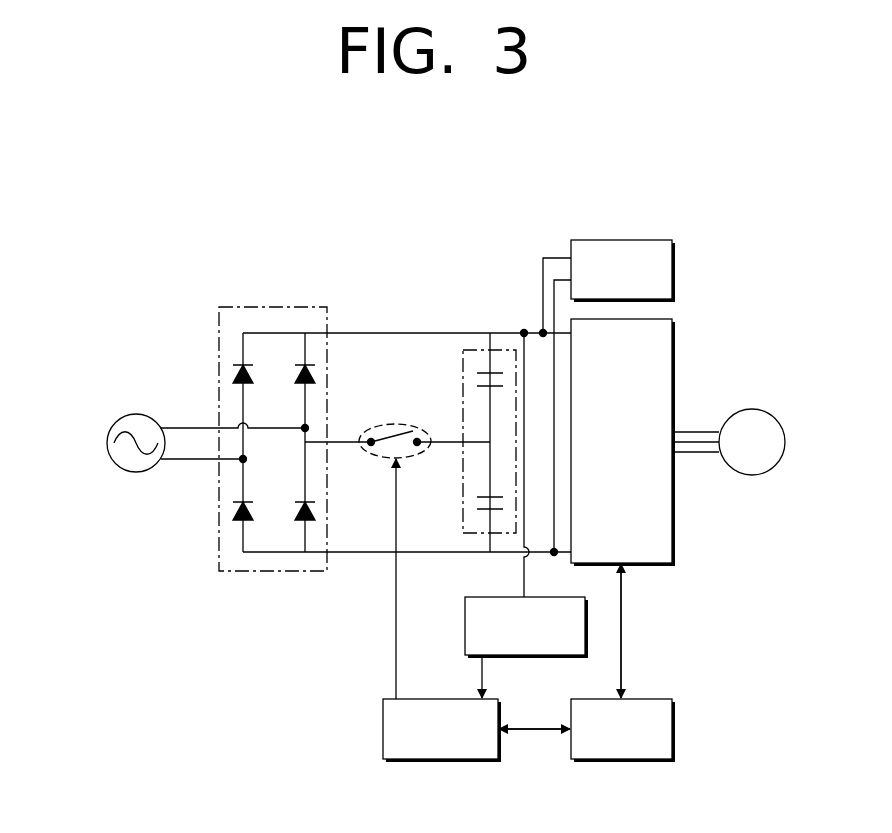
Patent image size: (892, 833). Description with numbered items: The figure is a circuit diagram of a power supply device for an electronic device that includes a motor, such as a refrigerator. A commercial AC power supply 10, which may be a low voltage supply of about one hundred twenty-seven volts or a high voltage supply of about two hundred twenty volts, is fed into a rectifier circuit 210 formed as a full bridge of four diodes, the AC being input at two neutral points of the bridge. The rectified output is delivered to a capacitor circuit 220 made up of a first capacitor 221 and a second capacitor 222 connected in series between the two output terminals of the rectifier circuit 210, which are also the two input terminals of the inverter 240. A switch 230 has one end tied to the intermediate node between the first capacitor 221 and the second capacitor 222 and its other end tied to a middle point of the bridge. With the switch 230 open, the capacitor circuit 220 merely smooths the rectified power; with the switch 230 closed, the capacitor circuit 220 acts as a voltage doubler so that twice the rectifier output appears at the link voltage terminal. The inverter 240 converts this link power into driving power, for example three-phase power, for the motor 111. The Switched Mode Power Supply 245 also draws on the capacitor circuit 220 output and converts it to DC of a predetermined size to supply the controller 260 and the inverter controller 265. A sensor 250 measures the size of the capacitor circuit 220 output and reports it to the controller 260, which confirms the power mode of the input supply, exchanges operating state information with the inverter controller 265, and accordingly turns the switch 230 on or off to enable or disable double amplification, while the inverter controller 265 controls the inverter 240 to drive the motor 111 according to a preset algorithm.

The AC power supply 10 is at (135, 472).
The rectifier circuit 210 is at (270, 307).
The capacitor circuit 220 is at (464, 421).
The first capacitor 221 is at (477, 373).
The second capacitor 222 is at (477, 497).
The switch 230 is at (380, 423).
The inverter 240 is at (674, 335).
The Switched Mode Power Supply (SMPS) 245 is at (674, 262).
The sensor 250 is at (482, 597).
The controller 260 is at (433, 698).
The inverter controller 265 is at (655, 698).
The motor 111 is at (750, 409).